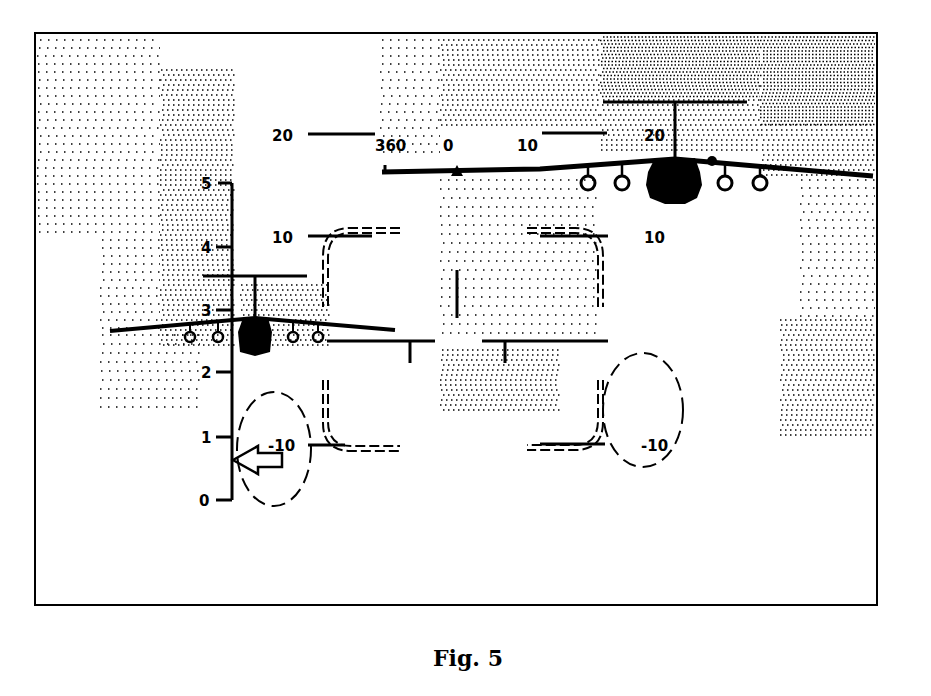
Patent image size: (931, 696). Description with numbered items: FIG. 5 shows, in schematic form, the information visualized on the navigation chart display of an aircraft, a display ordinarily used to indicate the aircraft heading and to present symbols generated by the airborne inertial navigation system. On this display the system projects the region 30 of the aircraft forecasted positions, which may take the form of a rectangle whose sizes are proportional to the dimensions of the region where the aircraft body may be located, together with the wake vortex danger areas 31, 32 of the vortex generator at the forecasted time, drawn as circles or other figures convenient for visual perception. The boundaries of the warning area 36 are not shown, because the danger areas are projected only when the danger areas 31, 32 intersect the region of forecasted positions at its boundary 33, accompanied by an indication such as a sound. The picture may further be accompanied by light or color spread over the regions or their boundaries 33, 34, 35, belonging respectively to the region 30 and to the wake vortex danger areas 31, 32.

The region of the A/C forecasted positions 30 is at (580, 297).
The wake vortex danger area 31 is at (295, 485).
The wake vortex danger area 32 is at (620, 441).
The boundary of the region of forecasted positions 33 is at (390, 456).
The boundary of wake vortex danger area 34 is at (265, 505).
The boundary of wake vortex danger area 35 is at (673, 370).
The warning area 36 is at (130, 595).